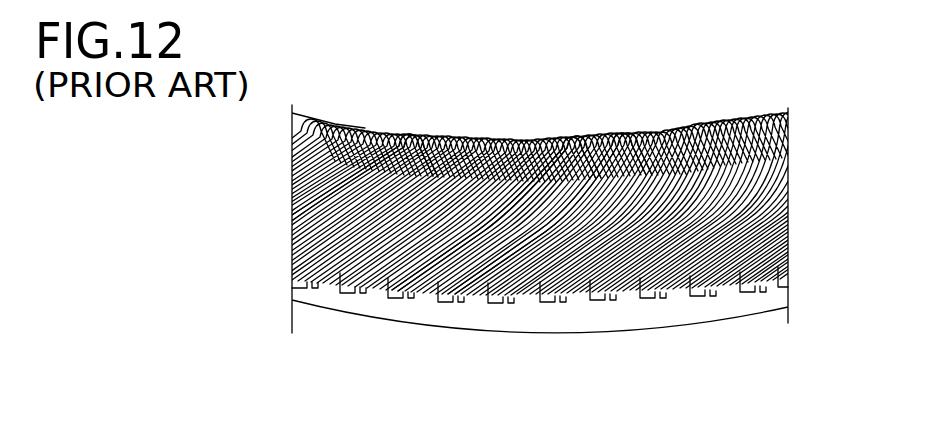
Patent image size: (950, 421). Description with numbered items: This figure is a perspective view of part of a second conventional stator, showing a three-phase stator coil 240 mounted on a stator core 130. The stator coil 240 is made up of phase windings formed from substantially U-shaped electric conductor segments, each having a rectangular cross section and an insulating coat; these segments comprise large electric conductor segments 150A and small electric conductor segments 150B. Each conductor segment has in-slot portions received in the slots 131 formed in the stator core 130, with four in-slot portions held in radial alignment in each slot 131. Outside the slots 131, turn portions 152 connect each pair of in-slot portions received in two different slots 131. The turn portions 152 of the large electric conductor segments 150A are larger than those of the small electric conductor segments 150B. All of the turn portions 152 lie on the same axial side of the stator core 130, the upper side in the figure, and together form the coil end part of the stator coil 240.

The stator coil 240 is at (482, 127).
The large electric conductor segments 150A is at (578, 128).
The small electric conductor segments 150B is at (634, 157).
The turn portions 152 is at (340, 207).
The stator core 130 is at (292, 305).
The slots 131 is at (603, 303).